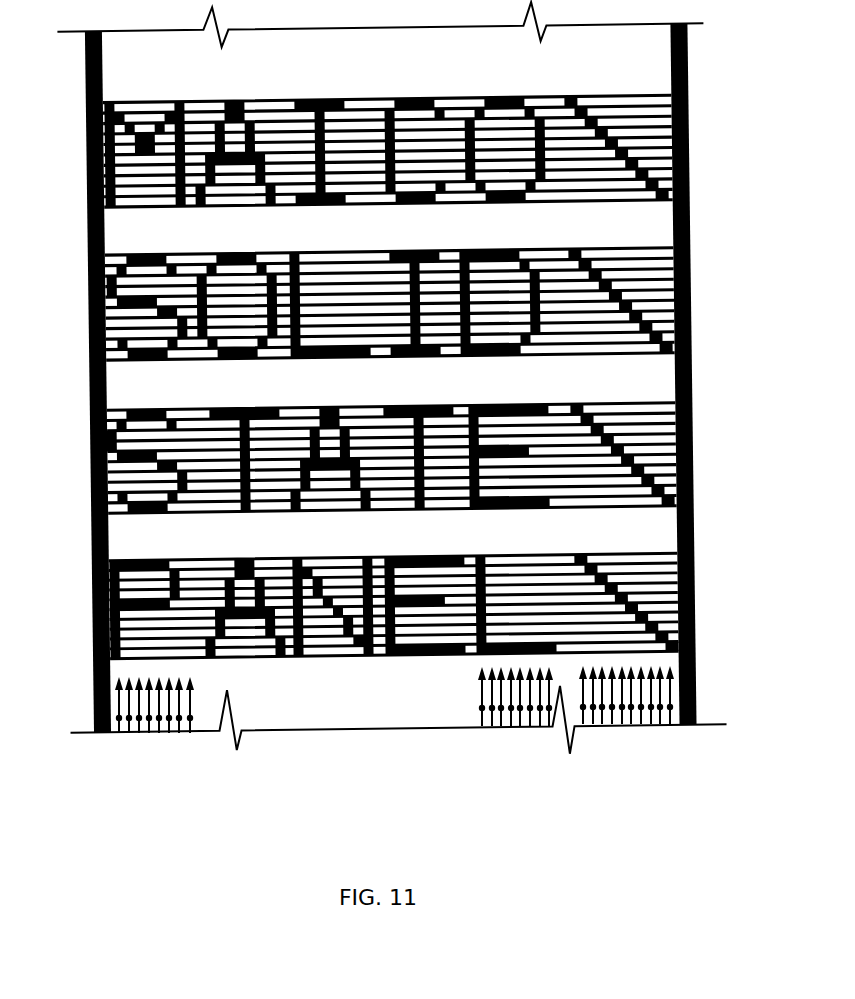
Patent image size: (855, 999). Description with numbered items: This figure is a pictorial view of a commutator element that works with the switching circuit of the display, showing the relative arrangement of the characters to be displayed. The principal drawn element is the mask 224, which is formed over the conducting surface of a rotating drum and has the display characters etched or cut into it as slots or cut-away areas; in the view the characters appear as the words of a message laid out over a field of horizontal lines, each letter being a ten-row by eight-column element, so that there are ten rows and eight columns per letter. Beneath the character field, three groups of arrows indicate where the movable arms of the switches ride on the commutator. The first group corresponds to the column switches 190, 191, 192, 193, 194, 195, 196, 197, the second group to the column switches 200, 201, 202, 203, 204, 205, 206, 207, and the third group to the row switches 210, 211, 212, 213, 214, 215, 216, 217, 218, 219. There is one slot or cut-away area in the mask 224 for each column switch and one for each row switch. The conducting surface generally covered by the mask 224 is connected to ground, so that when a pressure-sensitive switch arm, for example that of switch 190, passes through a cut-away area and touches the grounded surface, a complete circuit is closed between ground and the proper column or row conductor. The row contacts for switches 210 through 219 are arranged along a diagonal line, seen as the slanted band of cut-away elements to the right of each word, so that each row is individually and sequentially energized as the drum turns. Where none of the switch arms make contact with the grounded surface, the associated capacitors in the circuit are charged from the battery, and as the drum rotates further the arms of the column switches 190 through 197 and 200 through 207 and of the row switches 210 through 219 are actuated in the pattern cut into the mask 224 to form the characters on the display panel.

The mask 224 is at (90, 531).
The switch 190 is at (119, 718).
The switch 191 is at (129, 718).
The switch 192 is at (139, 718).
The switch 193 is at (149, 718).
The switch 194 is at (159, 718).
The switch 195 is at (169, 718).
The switch 196 is at (179, 718).
The switch 197 is at (190, 718).
The switch 200 is at (482, 708).
The switch 201 is at (492, 708).
The switch 202 is at (501, 708).
The switch 203 is at (511, 708).
The switch 204 is at (520, 708).
The switch 205 is at (530, 708).
The switch 206 is at (540, 708).
The switch 207 is at (549, 708).
The row switch 210 is at (583, 707).
The row switch 211 is at (593, 707).
The row switch 212 is at (602, 707).
The row switch 213 is at (612, 707).
The row switch 214 is at (622, 707).
The row switch 215 is at (631, 707).
The row switch 216 is at (641, 707).
The row switch 217 is at (651, 707).
The row switch 218 is at (660, 707).
The row switch 219 is at (670, 707).